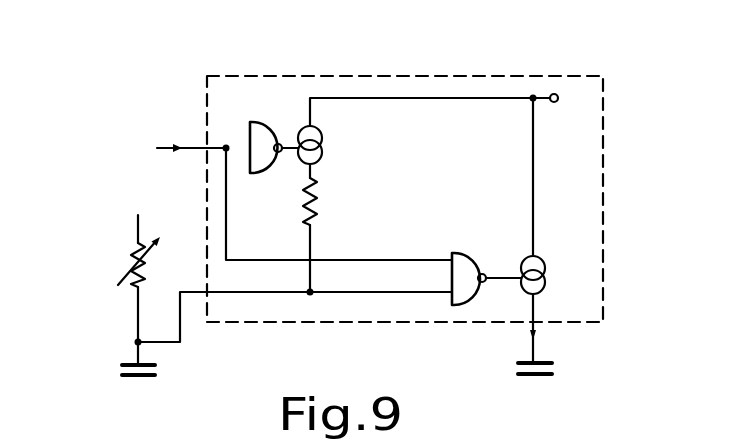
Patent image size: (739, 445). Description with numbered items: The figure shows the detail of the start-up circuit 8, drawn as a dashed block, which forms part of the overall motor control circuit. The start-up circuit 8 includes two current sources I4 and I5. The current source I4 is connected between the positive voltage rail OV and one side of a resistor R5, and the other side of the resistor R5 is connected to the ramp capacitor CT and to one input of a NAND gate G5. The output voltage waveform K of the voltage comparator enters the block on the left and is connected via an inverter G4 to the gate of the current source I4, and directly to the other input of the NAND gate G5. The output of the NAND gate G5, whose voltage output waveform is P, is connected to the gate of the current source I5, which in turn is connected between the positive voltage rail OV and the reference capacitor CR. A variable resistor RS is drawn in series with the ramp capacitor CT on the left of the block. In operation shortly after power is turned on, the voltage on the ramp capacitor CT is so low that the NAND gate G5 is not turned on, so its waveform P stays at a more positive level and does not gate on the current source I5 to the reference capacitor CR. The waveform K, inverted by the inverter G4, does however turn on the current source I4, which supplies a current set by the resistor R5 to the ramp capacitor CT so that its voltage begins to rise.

The start-up circuit 8 is at (603, 208).
The output voltage waveform of the voltage comparator COMP6 K is at (170, 145).
The inverter G4 is at (252, 127).
The current source I4 is at (323, 145).
The resistor R5 is at (315, 205).
The NAND gate G5 is at (458, 258).
The voltage output waveform of the NAND gate G5 P is at (503, 277).
The current source I5 is at (547, 272).
The positive voltage rail OV is at (572, 98).
The variable resistor RS is at (132, 250).
The ramp capacitor CT is at (160, 370).
The reference capacitor CR is at (553, 370).